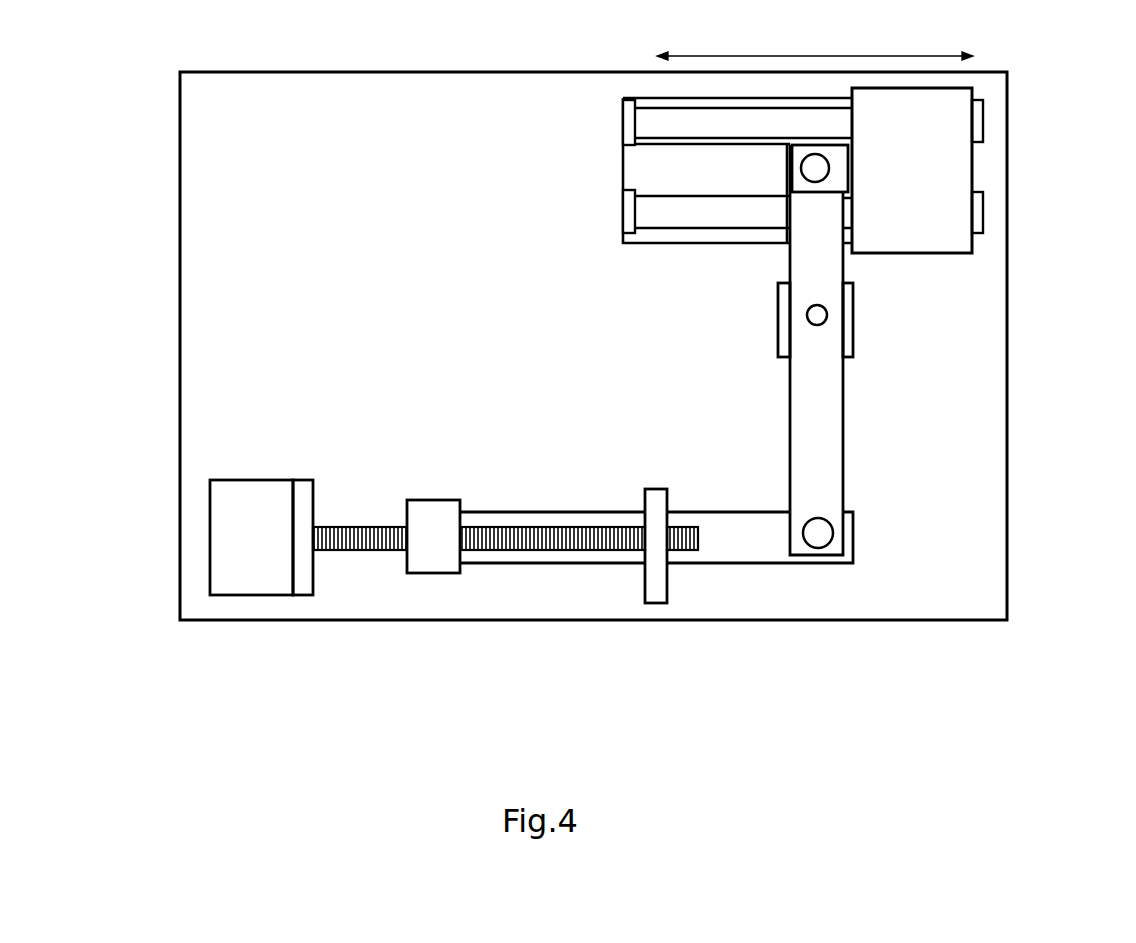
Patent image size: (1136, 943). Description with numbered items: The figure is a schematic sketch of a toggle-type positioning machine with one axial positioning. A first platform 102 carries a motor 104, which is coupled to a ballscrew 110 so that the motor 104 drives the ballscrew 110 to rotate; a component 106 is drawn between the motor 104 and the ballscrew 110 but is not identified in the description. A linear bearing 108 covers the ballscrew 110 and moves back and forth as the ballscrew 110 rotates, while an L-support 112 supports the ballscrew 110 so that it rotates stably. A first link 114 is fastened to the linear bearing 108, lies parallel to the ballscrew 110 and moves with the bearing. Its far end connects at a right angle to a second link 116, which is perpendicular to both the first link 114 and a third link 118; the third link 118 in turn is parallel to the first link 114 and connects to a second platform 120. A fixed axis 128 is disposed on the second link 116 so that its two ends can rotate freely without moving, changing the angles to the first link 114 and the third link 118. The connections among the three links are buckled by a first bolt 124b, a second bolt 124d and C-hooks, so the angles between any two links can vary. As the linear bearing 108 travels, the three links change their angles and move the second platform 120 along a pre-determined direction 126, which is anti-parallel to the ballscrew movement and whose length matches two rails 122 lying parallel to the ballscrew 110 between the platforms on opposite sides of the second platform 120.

The first platform 102 is at (212, 367).
The motor 104 is at (263, 573).
The coupling 106 is at (304, 500).
The linear bearing 108 is at (438, 530).
The ballscrew 110 is at (541, 552).
The L-support 112 is at (654, 530).
The first link 114 is at (742, 545).
The second link 116 is at (820, 408).
The third link 118 is at (842, 172).
The second platform 120 is at (895, 148).
The rails 122 is at (677, 118).
The first bolt 124b is at (815, 170).
The second bolt 124d is at (820, 533).
The pre-determined direction 126 is at (815, 43).
The fixed axis 128 is at (817, 315).